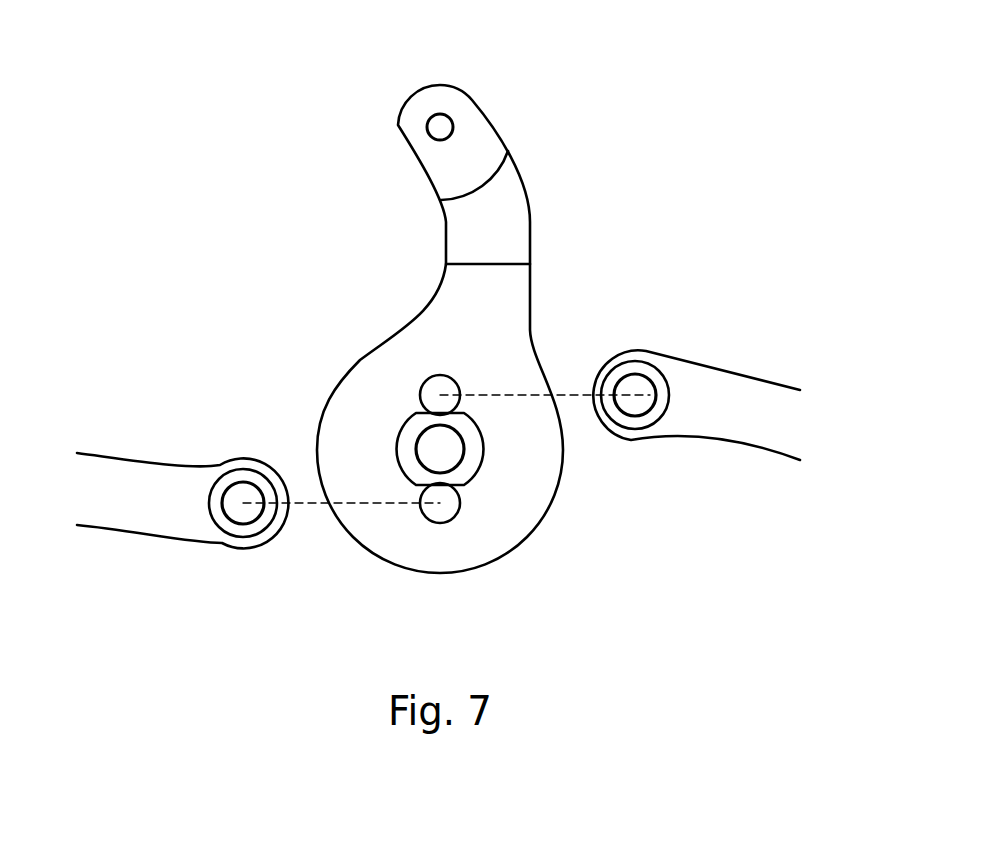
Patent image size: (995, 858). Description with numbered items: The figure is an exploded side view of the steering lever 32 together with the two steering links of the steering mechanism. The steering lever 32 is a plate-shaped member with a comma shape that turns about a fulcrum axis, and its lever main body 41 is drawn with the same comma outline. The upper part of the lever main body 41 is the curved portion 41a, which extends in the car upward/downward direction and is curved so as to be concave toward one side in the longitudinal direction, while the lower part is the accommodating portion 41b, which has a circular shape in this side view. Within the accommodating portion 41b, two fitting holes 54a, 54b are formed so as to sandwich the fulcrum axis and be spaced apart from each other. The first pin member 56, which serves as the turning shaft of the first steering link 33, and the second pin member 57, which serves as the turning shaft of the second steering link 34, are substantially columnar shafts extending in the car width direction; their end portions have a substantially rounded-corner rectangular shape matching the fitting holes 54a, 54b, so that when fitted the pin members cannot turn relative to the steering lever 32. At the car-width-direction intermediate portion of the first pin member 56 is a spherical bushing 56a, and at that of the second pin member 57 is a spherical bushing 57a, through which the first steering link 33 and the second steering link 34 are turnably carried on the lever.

The steering lever 32 is at (554, 100).
The lever main body 41 is at (574, 172).
The curved portion 41a is at (520, 231).
The accommodating portion 41b is at (527, 325).
The first steering link 33 is at (720, 380).
The second steering link 34 is at (155, 473).
The fitting hole 54a is at (443, 381).
The fitting hole 54b is at (440, 521).
The first pin member 56 is at (636, 383).
The spherical bushing 56a is at (658, 376).
The second pin member 57 is at (243, 513).
The spherical bushing 57a is at (222, 523).